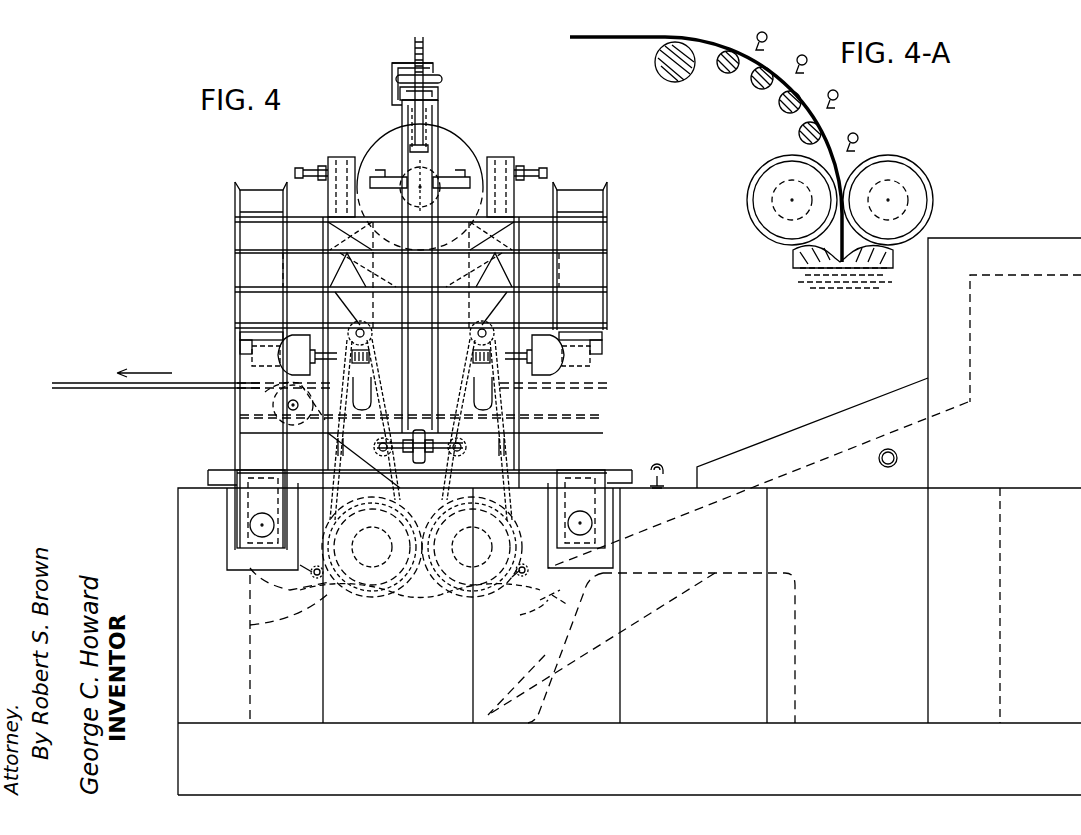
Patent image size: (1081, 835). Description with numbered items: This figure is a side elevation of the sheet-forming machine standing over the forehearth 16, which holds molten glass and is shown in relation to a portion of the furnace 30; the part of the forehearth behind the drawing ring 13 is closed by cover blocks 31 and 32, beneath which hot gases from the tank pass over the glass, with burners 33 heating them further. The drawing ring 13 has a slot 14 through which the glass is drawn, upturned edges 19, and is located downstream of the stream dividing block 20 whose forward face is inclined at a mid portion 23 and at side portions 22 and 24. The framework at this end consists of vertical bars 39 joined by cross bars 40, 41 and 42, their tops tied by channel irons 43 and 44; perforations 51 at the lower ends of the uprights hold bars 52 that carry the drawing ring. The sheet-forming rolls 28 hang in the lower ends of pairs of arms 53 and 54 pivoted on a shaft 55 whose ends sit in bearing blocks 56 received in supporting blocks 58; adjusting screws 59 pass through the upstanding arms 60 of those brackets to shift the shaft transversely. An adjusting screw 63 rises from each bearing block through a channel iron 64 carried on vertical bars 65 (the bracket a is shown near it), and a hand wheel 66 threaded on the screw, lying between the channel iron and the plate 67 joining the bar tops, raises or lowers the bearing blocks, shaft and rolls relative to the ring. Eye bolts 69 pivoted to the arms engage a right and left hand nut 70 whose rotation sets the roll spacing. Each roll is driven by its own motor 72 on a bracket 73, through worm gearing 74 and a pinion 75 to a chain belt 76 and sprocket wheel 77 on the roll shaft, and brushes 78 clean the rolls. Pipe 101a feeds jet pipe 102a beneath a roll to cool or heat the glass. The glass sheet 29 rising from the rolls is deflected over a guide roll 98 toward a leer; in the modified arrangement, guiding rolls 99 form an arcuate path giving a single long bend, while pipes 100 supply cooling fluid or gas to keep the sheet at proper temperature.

In FIG. 4, the drawing ring 13 is at (305, 594).
In FIG. 4-A, the drawing ring 13 is at (795, 262).
In FIG. 4, the slot 14 is at (410, 606).
In FIG. 4, the forehearth 16 is at (190, 598).
In FIG. 4, the upturned edges 19 is at (212, 477).
In FIG. 4, the stream dividing block 20 is at (796, 600).
In FIG. 4, the inclined portion 22 is at (536, 657).
In FIG. 4, the inclined mid portion 23 is at (657, 606).
In FIG. 4, the inclined portion 24 is at (547, 604).
In FIG. 4, the sheet-forming rolls 28 is at (322, 618).
In FIG. 4-A, the sheet-forming rolls 28 is at (766, 170).
In FIG. 4, the glass sheet 29 is at (80, 390).
In FIG. 4-A, the glass sheet 29 is at (622, 32).
In FIG. 4, the furnace 30 is at (1050, 240).
In FIG. 4, the cover block 31 is at (812, 420).
In FIG. 4, the cover block 32 is at (680, 475).
In FIG. 4, the burners 33 is at (879, 459).
In FIG. 4, the vertical bars 39 is at (237, 268).
In FIG. 4, the cross bar 40 is at (555, 416).
In FIG. 4, the cross bar 41 is at (237, 302).
In FIG. 4, the cross bar 42 is at (237, 236).
In FIG. 4, the channel iron 43 is at (582, 188).
In FIG. 4, the channel iron 44 is at (255, 188).
In FIG. 4, the perforation 51 is at (250, 543).
In FIG. 4, the bars 52 is at (258, 525).
In FIG. 4, the roll-supporting arm 53 is at (332, 276).
In FIG. 4, the roll-supporting arm 54 is at (500, 285).
In FIG. 4, the shaft 55 is at (462, 142).
In FIG. 4, the bearing block 56 is at (462, 192).
In FIG. 4, the supporting block 58 is at (332, 244).
In FIG. 4, the adjusting screw 59 is at (313, 167).
In FIG. 4, the upstanding arm 60 is at (330, 193).
In FIG. 4, the adjusting screw 63 is at (414, 52).
In FIG. 4, the channel iron 64 is at (395, 100).
In FIG. 4, the vertical bars 65 is at (413, 143).
In FIG. 4, the hand wheel 66 is at (430, 75).
In FIG. 4, the plate 67 is at (434, 92).
In FIG. 4, the eye bolt 69 is at (425, 430).
In FIG. 4, the threaded nut 70 is at (424, 455).
In FIG. 4, the motor 72 is at (305, 340).
In FIG. 4, the bracket 73 is at (240, 390).
In FIG. 4, the worm gearing 74 is at (372, 366).
In FIG. 4, the pinion 75 is at (374, 337).
In FIG. 4, the chain belt 76 is at (335, 450).
In FIG. 4, the sprocket wheel 77 is at (330, 545).
In FIG. 4, the brush 78 is at (419, 546).
In FIG. 4, the guide roll 98 is at (240, 406).
In FIG. 4-A, the guide roll 98 is at (674, 76).
In FIG. 4-A, the guiding rolls 99 is at (779, 104).
In FIG. 4-A, the pipes 100 is at (808, 62).
In FIG. 4, the pipe 101a is at (256, 582).
In FIG. 4, the jet pipe 102a is at (254, 628).
In FIG. 4, the bracket arm a is at (388, 70).